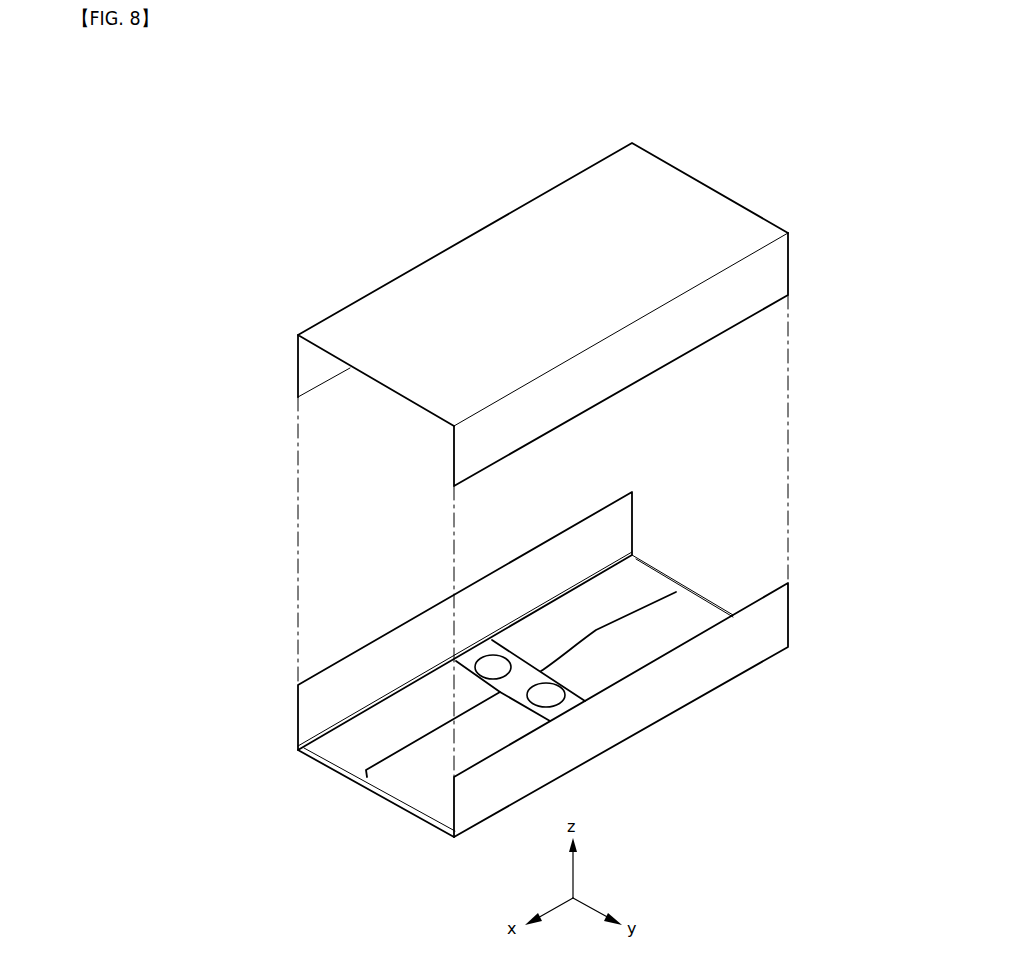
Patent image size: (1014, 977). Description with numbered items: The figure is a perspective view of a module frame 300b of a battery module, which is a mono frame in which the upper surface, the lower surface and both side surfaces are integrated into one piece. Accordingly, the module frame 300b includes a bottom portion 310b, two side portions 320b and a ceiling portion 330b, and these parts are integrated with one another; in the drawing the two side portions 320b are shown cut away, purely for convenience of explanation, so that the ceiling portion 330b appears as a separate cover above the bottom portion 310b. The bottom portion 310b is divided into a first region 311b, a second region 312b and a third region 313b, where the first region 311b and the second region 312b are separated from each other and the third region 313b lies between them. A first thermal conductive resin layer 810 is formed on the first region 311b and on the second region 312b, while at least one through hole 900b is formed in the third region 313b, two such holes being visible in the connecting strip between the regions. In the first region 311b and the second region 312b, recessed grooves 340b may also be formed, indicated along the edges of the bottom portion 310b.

The module frame 300b is at (470, 97).
The bottom portion 310b is at (350, 791).
The first region 311b is at (433, 727).
The second region 312b is at (596, 631).
The third region 313b is at (500, 694).
The side portions 320b is at (778, 270).
The ceiling portion 330b is at (431, 277).
The recessed groove 340b is at (697, 600).
The first thermal conductive resin layer 810 is at (490, 731).
The through hole 900b is at (481, 664).